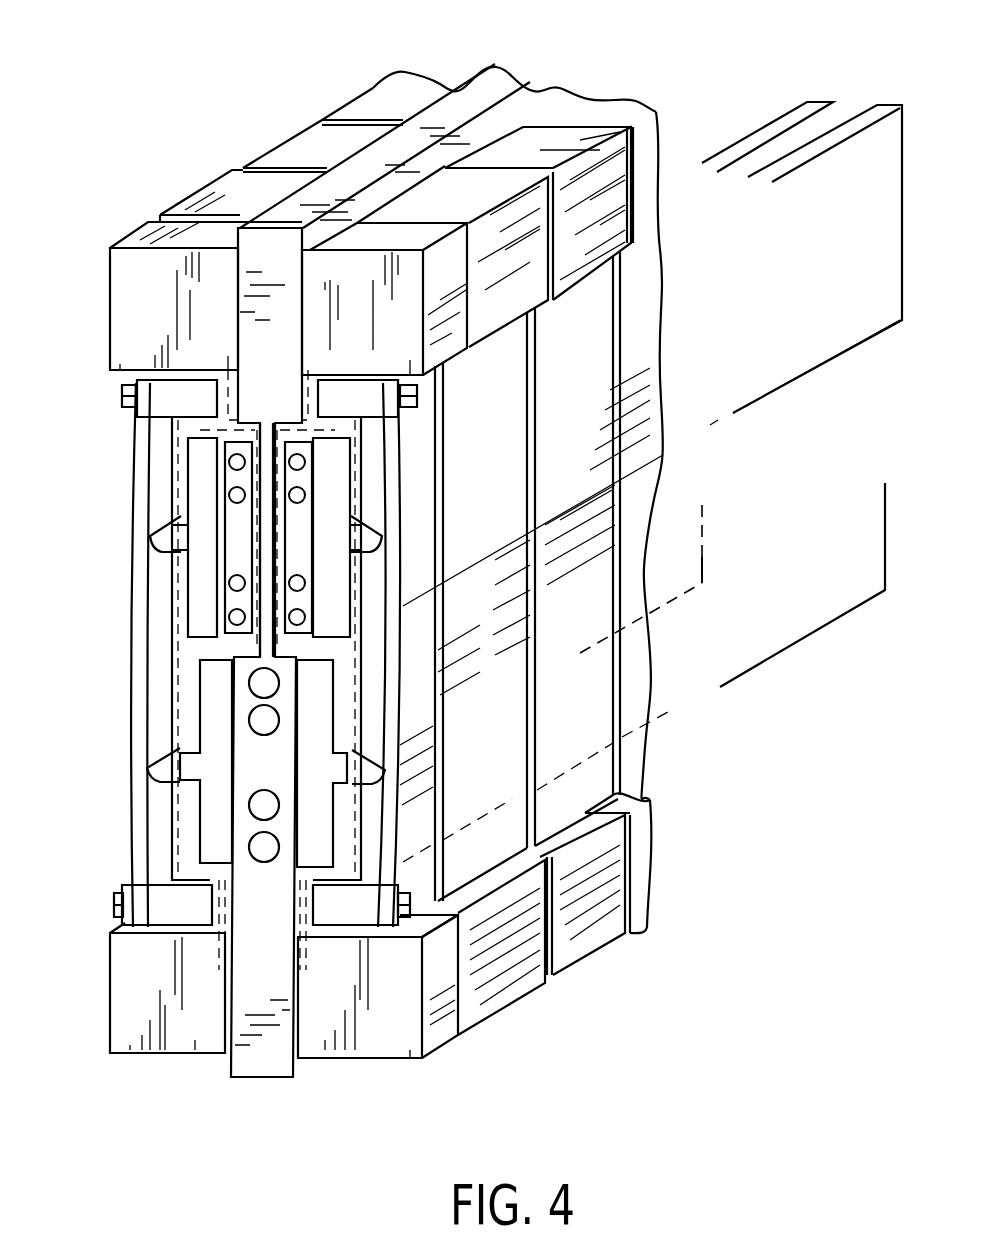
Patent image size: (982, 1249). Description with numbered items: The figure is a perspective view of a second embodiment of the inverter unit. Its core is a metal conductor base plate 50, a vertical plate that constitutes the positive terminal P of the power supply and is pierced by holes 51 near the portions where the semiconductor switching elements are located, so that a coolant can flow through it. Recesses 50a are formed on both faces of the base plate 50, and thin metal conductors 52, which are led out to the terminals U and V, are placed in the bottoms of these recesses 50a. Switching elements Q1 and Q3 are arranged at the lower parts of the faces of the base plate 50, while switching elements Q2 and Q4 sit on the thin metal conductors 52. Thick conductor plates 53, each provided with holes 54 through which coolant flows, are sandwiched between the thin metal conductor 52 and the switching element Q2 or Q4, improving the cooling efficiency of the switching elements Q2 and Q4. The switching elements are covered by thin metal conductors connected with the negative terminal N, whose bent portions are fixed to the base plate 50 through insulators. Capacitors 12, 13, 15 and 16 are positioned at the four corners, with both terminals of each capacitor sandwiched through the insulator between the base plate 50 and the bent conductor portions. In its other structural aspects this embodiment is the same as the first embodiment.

The capacitor 12 is at (422, 303).
The capacitor 13 is at (128, 311).
The capacitor 15 is at (352, 1060).
The capacitor 16 is at (158, 1055).
The metal conductor base plate 50 is at (257, 1079).
The recesses 50a is at (267, 623).
The holes 51 is at (262, 866).
The thin metal conductors 52 is at (180, 708).
The thick conductor plates 53 is at (230, 542).
The holes 54 is at (228, 585).
The switching element Q1 is at (330, 703).
The switching element Q2 is at (340, 478).
The switching element Q3 is at (207, 815).
The switching element Q4 is at (198, 487).
The positive terminal P is at (524, 82).
The terminal U is at (857, 112).
The terminal V is at (746, 130).
The negative terminal N is at (843, 622).